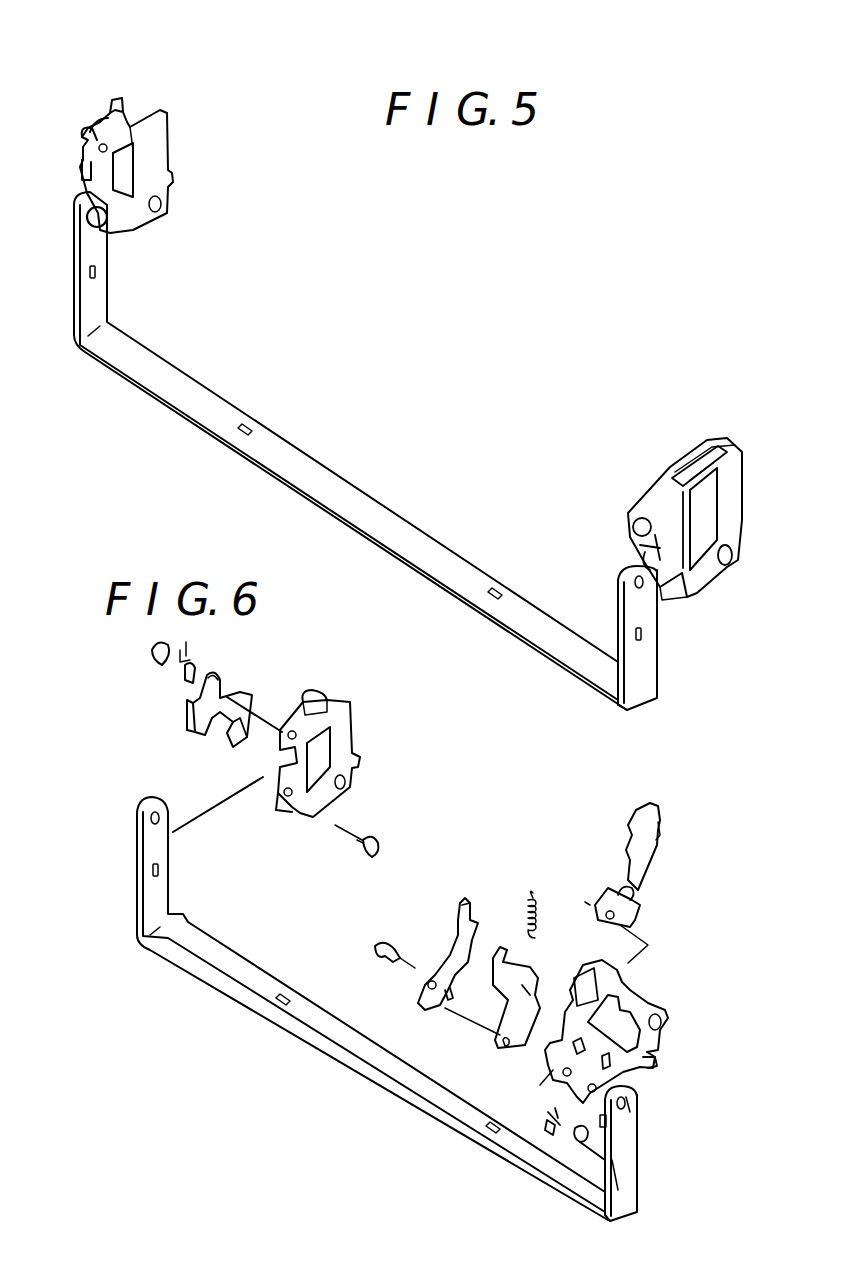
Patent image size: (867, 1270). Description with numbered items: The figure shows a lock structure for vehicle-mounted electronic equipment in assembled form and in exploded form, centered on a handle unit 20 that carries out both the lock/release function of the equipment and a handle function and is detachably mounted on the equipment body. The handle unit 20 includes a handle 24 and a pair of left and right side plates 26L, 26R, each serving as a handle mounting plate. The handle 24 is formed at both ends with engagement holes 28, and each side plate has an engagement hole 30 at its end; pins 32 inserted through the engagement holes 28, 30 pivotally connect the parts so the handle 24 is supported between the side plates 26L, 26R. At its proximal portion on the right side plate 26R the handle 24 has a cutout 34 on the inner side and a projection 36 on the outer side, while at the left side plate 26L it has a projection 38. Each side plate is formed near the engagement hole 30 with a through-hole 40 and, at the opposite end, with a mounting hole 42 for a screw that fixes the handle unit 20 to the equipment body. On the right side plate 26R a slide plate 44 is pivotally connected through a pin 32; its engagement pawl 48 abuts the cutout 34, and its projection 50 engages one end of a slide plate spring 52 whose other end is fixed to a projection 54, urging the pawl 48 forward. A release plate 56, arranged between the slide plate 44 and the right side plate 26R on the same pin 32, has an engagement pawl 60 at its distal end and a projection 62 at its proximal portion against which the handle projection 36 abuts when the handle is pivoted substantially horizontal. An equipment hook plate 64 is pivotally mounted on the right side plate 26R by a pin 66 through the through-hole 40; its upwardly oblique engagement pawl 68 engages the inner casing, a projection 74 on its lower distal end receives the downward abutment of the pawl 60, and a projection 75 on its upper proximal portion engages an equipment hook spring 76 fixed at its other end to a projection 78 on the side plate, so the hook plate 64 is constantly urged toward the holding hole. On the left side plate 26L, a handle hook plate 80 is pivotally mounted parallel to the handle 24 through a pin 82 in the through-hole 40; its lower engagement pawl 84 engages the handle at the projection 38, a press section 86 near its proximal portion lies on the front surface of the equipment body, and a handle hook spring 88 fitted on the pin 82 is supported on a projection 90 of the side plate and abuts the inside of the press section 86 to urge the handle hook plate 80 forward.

In FIG. 5, the handle unit 20 is at (322, 390).
In FIG. 6, the handle unit 20 is at (232, 1018).
In FIG. 5, the handle 24 is at (357, 548).
In FIG. 6, the handle 24 is at (137, 845).
In FIG. 5, the left side plate 26L is at (178, 130).
In FIG. 6, the left side plate 26L is at (296, 815).
In FIG. 5, the right side plate 26R is at (745, 455).
In FIG. 6, the right side plate 26R is at (663, 1068).
In FIG. 5, the engagement hole 28 is at (648, 596).
In FIG. 6, the engagement hole 28 is at (168, 825).
In FIG. 6, the engagement hole 30 is at (290, 805).
In FIG. 5, the pin 32 is at (72, 234).
In FIG. 6, the pin 32 is at (370, 858).
In FIG. 6, the cutout 34 is at (638, 1098).
In FIG. 5, the projection 36 is at (612, 596).
In FIG. 6, the projection 36 is at (622, 1120).
In FIG. 6, the projection 38 is at (172, 818).
In FIG. 6, the through-hole 40 is at (290, 722).
In FIG. 5, the mounting hole 42 is at (172, 206).
In FIG. 6, the mounting hole 42 is at (355, 777).
In FIG. 6, the slide plate 44 is at (445, 935).
In FIG. 6, the engagement pawl 48 is at (437, 1012).
In FIG. 6, the projection 50 is at (462, 905).
In FIG. 5, the slide plate spring 52 is at (698, 578).
In FIG. 6, the slide plate spring 52 is at (513, 905).
In FIG. 6, the projection 54 is at (661, 1060).
In FIG. 5, the release plate 56 is at (720, 565).
In FIG. 6, the release plate 56 is at (515, 1050).
In FIG. 6, the engagement pawl 60 is at (515, 956).
In FIG. 6, the projection 62 is at (497, 1043).
In FIG. 5, the equipment hook plate 64 is at (700, 445).
In FIG. 6, the equipment hook plate 64 is at (608, 895).
In FIG. 5, the pin 66 is at (88, 130).
In FIG. 6, the pin 66 is at (615, 1185).
In FIG. 6, the engagement pawl 68 is at (632, 817).
In FIG. 6, the projection 74 is at (665, 830).
In FIG. 6, the projection 75 is at (635, 893).
In FIG. 5, the equipment hook spring 76 is at (640, 512).
In FIG. 6, the equipment hook spring 76 is at (560, 1130).
In FIG. 6, the projection 78 is at (640, 1010).
In FIG. 5, the handle hook plate 80 is at (138, 128).
In FIG. 6, the handle hook plate 80 is at (196, 730).
In FIG. 6, the pin 82 is at (150, 660).
In FIG. 6, the engagement pawl 84 is at (242, 738).
In FIG. 5, the press section 86 is at (78, 163).
In FIG. 6, the press section 86 is at (188, 720).
In FIG. 5, the handle hook spring 88 is at (98, 118).
In FIG. 6, the handle hook spring 88 is at (185, 675).
In FIG. 5, the projection 90 is at (118, 108).
In FIG. 6, the projection 90 is at (310, 708).